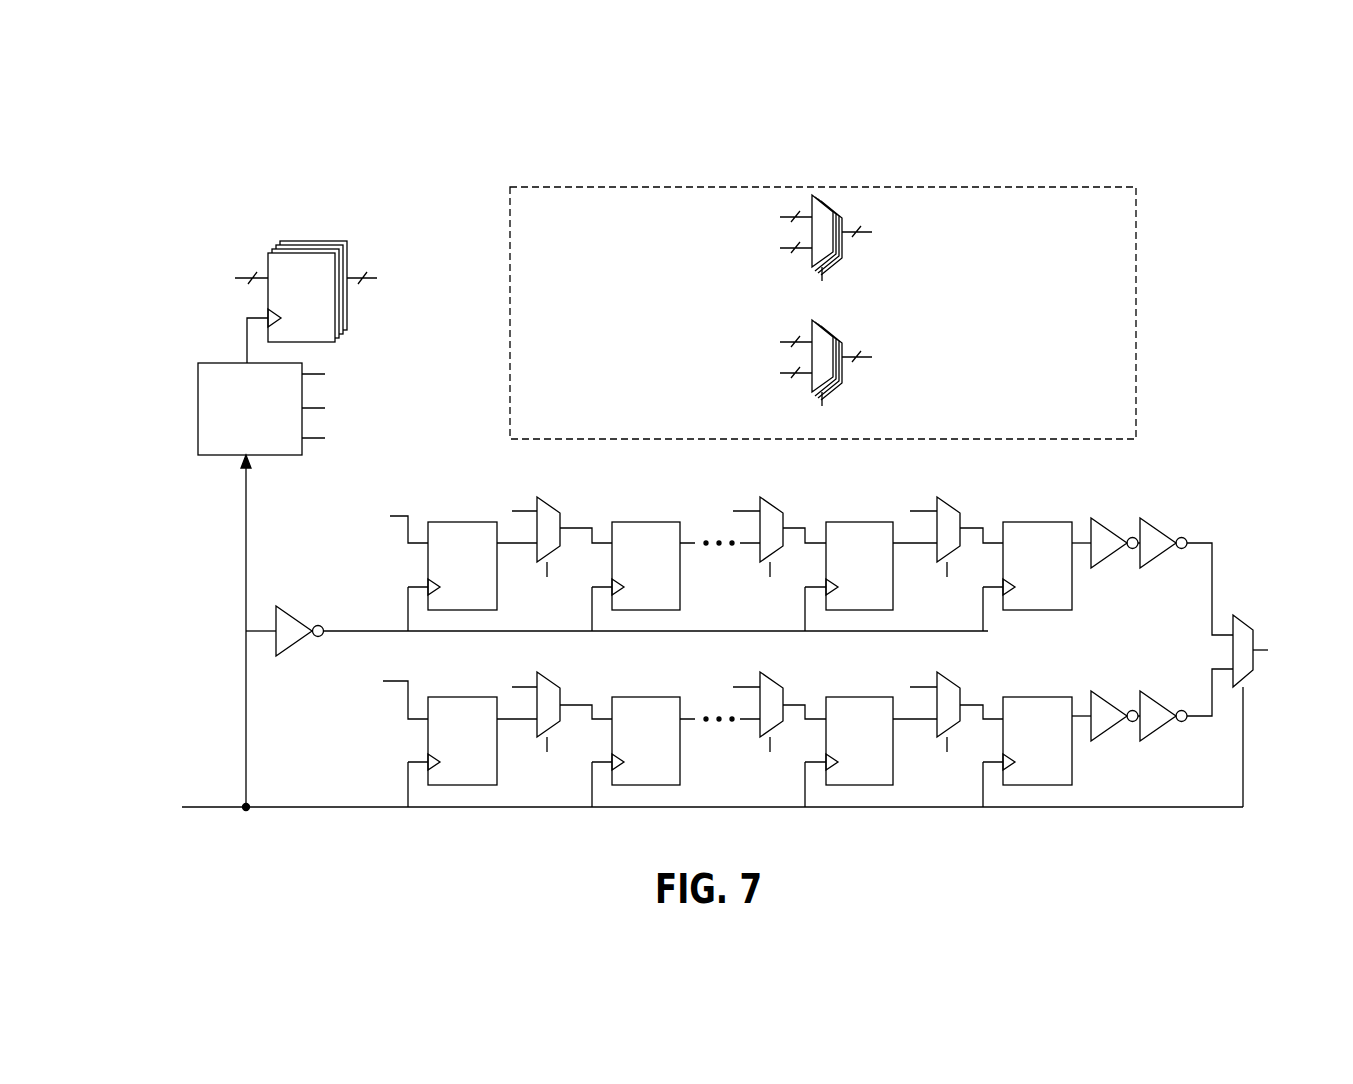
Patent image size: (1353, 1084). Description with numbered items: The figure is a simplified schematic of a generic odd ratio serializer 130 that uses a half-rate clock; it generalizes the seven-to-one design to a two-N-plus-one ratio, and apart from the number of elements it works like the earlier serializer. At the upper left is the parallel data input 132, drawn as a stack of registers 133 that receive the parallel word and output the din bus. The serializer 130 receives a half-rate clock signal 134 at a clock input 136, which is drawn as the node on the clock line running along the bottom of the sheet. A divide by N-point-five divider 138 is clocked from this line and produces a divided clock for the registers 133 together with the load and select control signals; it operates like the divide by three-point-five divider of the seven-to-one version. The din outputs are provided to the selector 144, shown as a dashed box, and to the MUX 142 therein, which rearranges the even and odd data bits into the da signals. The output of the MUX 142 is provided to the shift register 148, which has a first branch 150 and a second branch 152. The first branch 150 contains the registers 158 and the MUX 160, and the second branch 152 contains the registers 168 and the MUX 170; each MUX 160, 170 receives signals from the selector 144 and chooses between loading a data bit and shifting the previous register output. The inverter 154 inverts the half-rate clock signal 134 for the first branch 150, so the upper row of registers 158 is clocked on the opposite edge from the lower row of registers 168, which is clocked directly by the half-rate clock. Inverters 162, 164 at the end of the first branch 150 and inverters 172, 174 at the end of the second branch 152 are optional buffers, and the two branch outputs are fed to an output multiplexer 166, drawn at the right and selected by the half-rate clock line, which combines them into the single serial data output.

The serializer 130 is at (1235, 238).
The parallel data input 132 is at (300, 208).
The registers 133 is at (335, 343).
The half-rate clock signal 134 is at (222, 820).
The clock input 136 is at (250, 805).
The divide by N.5 divider 138 is at (198, 403).
The MUX 142 is at (836, 195).
The selector 144 is at (1110, 187).
The shift register 148 is at (1237, 465).
The first branch 150 is at (1237, 555).
The second branch 152 is at (1258, 735).
The inverter 154 is at (294, 605).
The registers 158 is at (739, 532).
The MUX 160 is at (725, 525).
The inverter 162 is at (1112, 522).
The inverter 164 is at (1161, 522).
The output multiplexer 166 is at (1254, 626).
The registers 168 is at (737, 710).
The MUX 170 is at (725, 703).
The inverter 172 is at (1112, 696).
The inverter 174 is at (1161, 696).